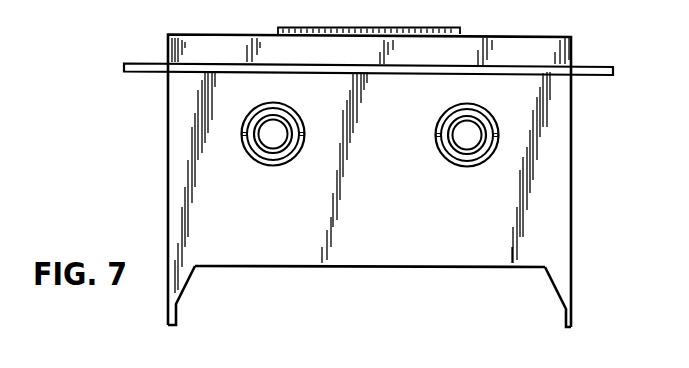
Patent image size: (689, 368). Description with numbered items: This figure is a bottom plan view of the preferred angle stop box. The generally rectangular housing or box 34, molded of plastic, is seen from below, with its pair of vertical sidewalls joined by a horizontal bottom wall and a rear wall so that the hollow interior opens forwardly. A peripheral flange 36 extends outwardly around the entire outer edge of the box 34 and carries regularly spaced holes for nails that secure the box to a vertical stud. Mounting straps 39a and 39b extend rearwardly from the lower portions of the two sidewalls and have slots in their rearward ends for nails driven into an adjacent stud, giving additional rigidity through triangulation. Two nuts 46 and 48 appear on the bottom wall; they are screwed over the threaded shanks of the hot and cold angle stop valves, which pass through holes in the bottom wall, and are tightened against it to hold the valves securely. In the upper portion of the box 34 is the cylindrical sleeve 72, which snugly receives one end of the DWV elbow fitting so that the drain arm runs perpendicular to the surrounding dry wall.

The housing or box 34 is at (571, 154).
The peripheral flange 36 is at (152, 64).
The cylindrical sleeve 72 is at (290, 28).
The nut 46 is at (273, 166).
The nut 48 is at (468, 167).
The mounting strap 39a is at (566, 316).
The mounting strap 39b is at (178, 302).